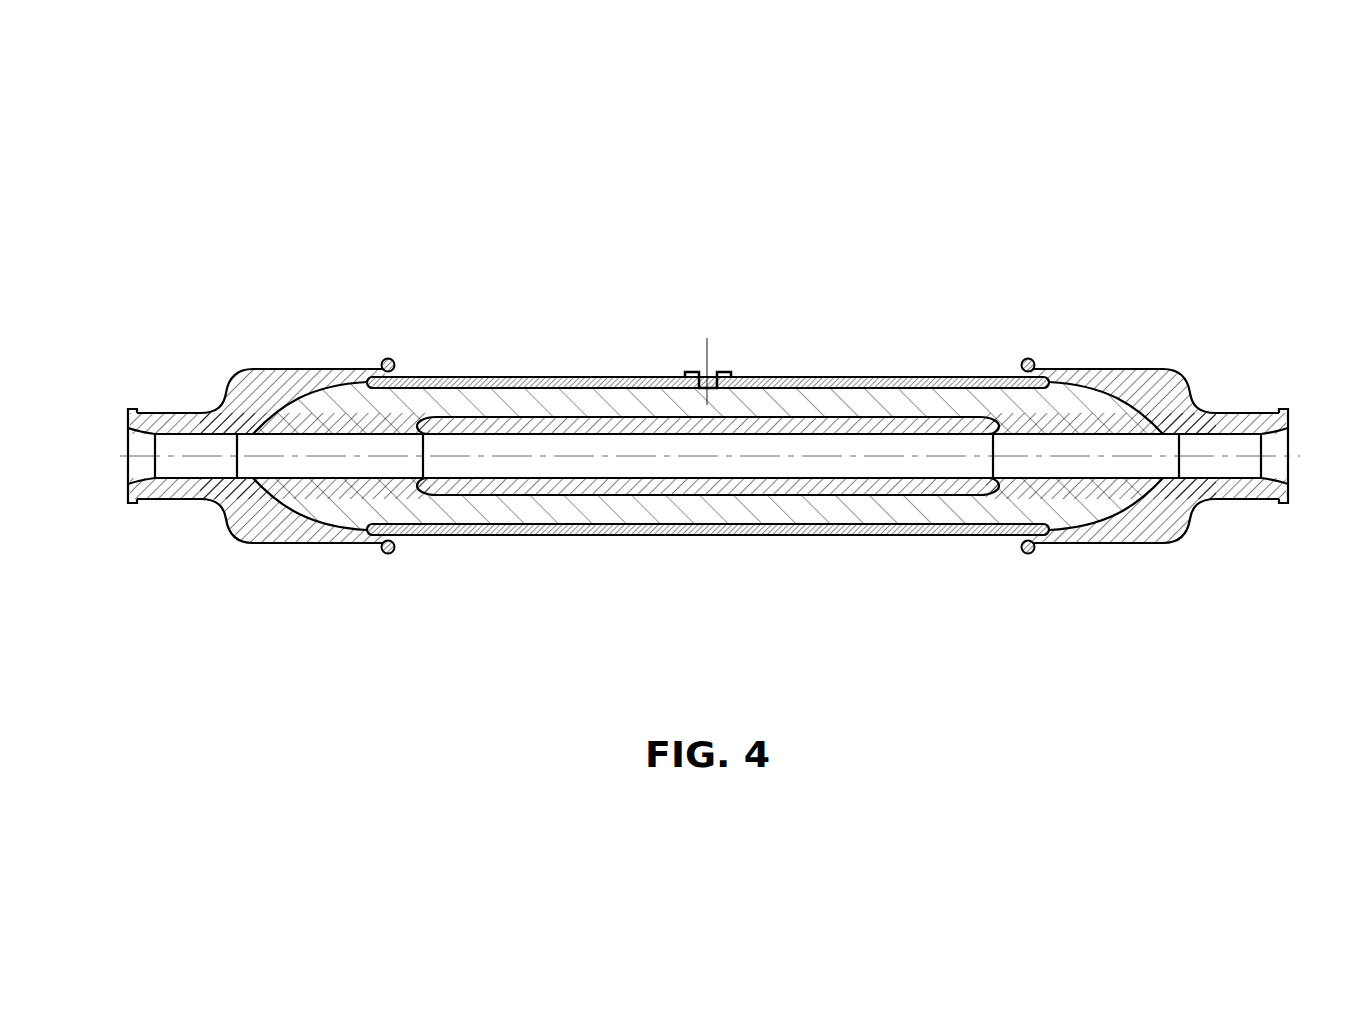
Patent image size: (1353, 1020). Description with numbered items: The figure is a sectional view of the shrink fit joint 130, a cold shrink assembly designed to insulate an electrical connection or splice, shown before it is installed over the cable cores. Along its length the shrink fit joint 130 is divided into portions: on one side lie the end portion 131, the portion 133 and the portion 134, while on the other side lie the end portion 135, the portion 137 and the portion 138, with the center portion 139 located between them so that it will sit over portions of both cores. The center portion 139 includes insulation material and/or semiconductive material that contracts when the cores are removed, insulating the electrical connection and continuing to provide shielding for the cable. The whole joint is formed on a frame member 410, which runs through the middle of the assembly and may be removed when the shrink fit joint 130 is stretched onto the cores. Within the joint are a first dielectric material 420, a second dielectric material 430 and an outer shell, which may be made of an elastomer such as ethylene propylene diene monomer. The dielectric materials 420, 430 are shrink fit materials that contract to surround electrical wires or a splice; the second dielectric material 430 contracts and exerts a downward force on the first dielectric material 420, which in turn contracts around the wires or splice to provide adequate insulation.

The shrink fit joint 130 is at (296, 137).
The end portion 131 is at (190, 418).
The portion 133 is at (303, 372).
The portion 134 is at (388, 359).
The end portion 135 is at (1228, 418).
The portion 137 is at (1112, 370).
The portion 138 is at (1026, 359).
The center portion 139 is at (632, 377).
The frame member 410 is at (335, 475).
The first dielectric material 420 is at (780, 417).
The second dielectric material 430 is at (892, 400).